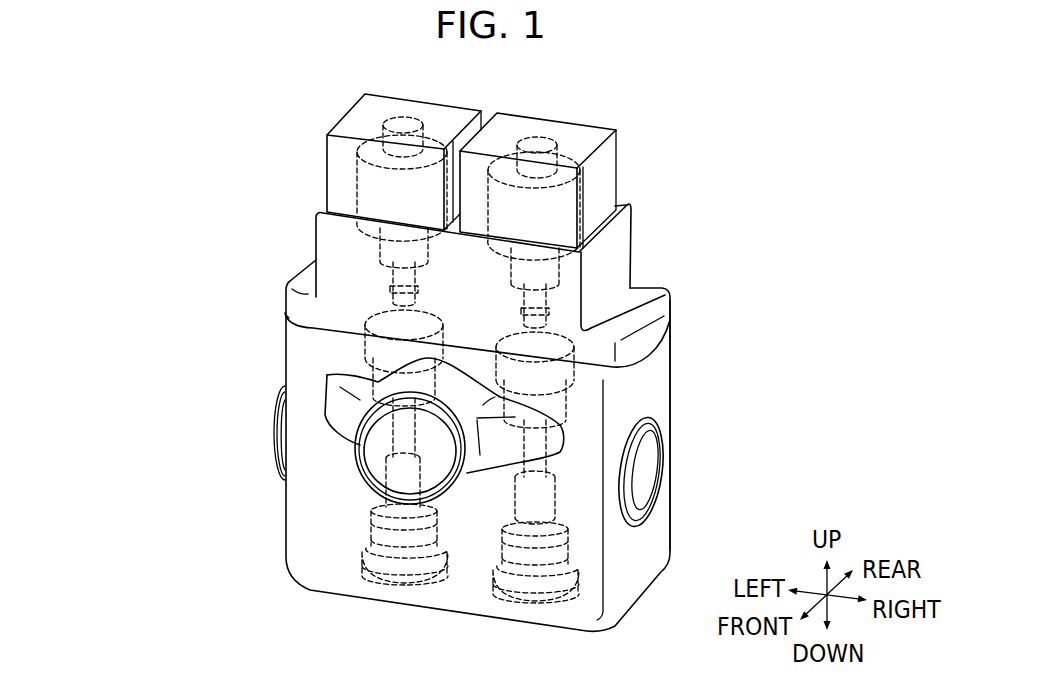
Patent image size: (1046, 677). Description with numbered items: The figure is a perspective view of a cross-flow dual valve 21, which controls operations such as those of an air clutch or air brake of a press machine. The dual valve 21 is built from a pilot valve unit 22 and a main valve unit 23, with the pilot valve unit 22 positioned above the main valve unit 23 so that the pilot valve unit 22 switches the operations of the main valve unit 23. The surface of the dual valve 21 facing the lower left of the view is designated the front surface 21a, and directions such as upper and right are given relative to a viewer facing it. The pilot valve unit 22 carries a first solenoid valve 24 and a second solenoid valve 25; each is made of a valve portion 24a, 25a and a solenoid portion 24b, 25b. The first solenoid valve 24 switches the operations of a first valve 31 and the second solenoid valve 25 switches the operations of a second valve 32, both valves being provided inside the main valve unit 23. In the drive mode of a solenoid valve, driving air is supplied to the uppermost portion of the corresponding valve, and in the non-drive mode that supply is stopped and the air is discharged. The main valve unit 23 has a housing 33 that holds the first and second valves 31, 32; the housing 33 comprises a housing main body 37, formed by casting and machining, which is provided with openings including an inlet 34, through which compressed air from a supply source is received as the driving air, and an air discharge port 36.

The cross-flow dual valve 21 is at (121, 149).
The front surface 21a is at (312, 357).
The pilot valve unit 22 is at (285, 260).
The main valve unit 23 is at (259, 448).
The first solenoid valve 24 is at (618, 136).
The valve portion 24a is at (545, 300).
The solenoid portion 24b is at (584, 188).
The second solenoid valve 25 is at (336, 121).
The valve portion 25a is at (395, 265).
The solenoid portion 25b is at (355, 178).
The first valve 31 is at (580, 550).
The second valve 32 is at (365, 526).
The housing 33 is at (671, 387).
The inlet 34 is at (647, 493).
The air discharge port 36 is at (372, 462).
The housing main body 37 is at (653, 405).